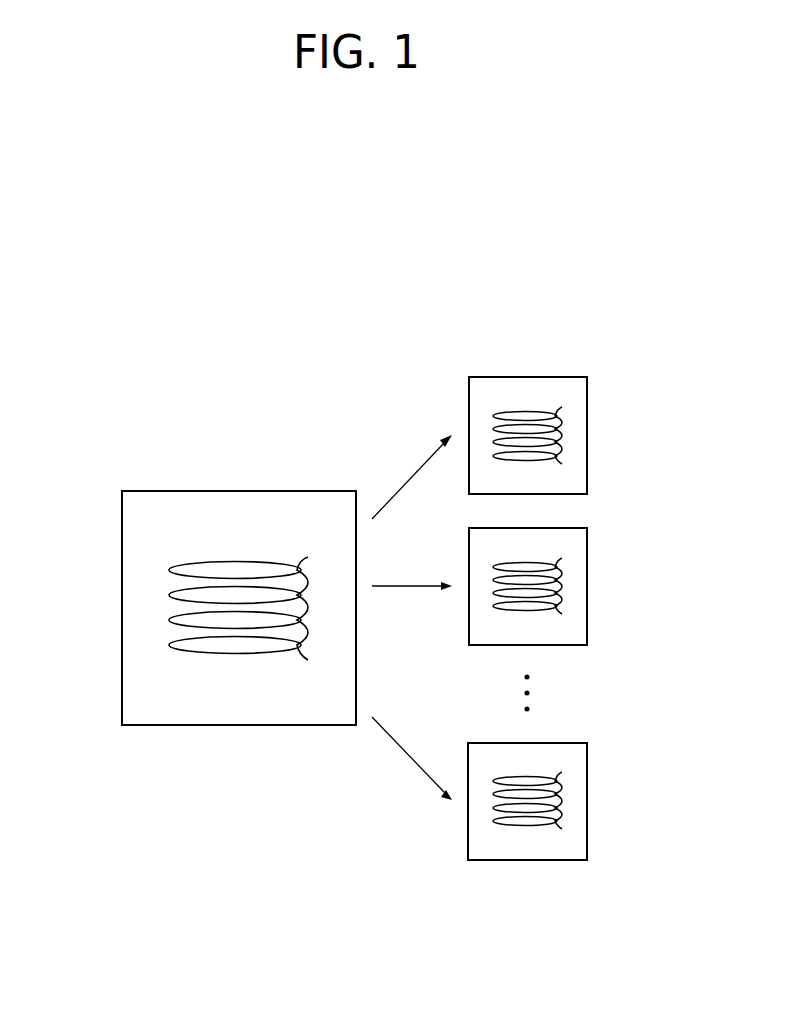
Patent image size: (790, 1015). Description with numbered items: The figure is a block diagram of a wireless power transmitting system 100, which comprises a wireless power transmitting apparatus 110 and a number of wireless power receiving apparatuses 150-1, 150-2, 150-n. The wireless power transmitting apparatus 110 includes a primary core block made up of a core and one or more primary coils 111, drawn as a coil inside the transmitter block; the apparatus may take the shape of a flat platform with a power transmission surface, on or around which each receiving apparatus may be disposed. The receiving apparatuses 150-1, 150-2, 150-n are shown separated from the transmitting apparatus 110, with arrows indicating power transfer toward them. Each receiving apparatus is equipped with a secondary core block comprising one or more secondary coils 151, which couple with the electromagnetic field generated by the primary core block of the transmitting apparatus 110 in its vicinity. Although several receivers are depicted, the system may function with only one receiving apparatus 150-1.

The wireless power transmitting system 100 is at (134, 370).
The wireless power transmitting apparatus 110 is at (238, 491).
The primary coil 111 is at (238, 656).
The wireless power receiving apparatus 150-1 is at (587, 434).
The wireless power receiving apparatus 150-2 is at (587, 587).
The wireless power receiving apparatus 150-n is at (587, 800).
The secondary coil 151 is at (527, 412).